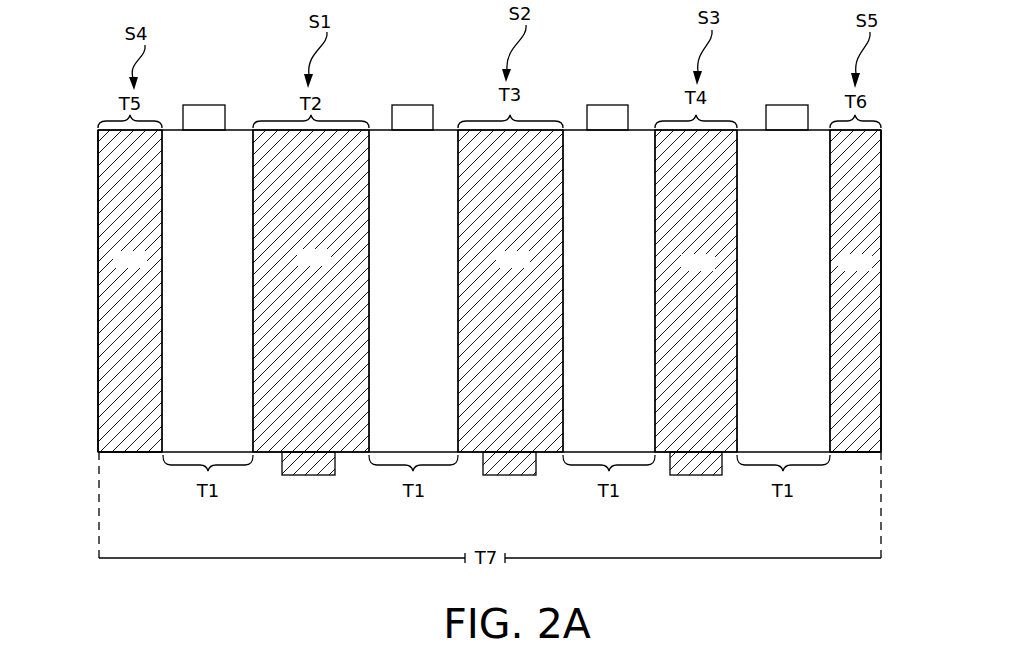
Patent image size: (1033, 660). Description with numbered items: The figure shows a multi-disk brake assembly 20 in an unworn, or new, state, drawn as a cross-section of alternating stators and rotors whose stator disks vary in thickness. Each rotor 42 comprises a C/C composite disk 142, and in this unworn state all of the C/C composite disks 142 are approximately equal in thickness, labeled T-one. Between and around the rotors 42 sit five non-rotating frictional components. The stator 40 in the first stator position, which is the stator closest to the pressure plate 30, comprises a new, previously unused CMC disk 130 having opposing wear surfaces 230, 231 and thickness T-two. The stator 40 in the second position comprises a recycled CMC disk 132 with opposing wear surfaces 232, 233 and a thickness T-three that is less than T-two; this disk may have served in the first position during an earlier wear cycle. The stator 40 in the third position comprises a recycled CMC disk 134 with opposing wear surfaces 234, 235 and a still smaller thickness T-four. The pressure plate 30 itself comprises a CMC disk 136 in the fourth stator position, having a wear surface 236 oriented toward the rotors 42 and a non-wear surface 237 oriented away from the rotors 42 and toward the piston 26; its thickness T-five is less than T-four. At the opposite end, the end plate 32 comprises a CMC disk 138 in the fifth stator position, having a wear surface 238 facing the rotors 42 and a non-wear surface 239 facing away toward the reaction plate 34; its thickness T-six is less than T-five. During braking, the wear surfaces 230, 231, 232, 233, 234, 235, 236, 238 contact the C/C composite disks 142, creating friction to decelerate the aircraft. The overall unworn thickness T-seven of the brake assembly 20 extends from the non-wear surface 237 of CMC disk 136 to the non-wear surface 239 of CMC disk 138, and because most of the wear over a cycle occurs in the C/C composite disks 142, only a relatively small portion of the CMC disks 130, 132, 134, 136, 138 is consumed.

The brake assembly 20 is at (97, 76).
The piston 26 is at (98, 297).
The pressure plate 30 is at (118, 430).
The end plate 32 is at (855, 440).
The reaction plate 34 is at (881, 307).
The stator 40 is at (312, 437).
The rotor 42 is at (207, 157).
The CMC disk 130 is at (311, 291).
The CMC disk 132 is at (510, 291).
The CMC disk 134 is at (696, 291).
The CMC disk 136 is at (130, 291).
The CMC disk 138 is at (855, 291).
The C/C composite disk 142 is at (190, 247).
The wear surface 230 is at (253, 330).
The wear surface 231 is at (369, 335).
The wear surface 232 is at (458, 388).
The wear surface 233 is at (563, 362).
The wear surface 234 is at (655, 325).
The wear surface 235 is at (737, 385).
The wear surface 236 is at (162, 373).
The non-wear surface 237 is at (98, 358).
The wear surface 238 is at (830, 357).
The non-wear surface 239 is at (881, 383).